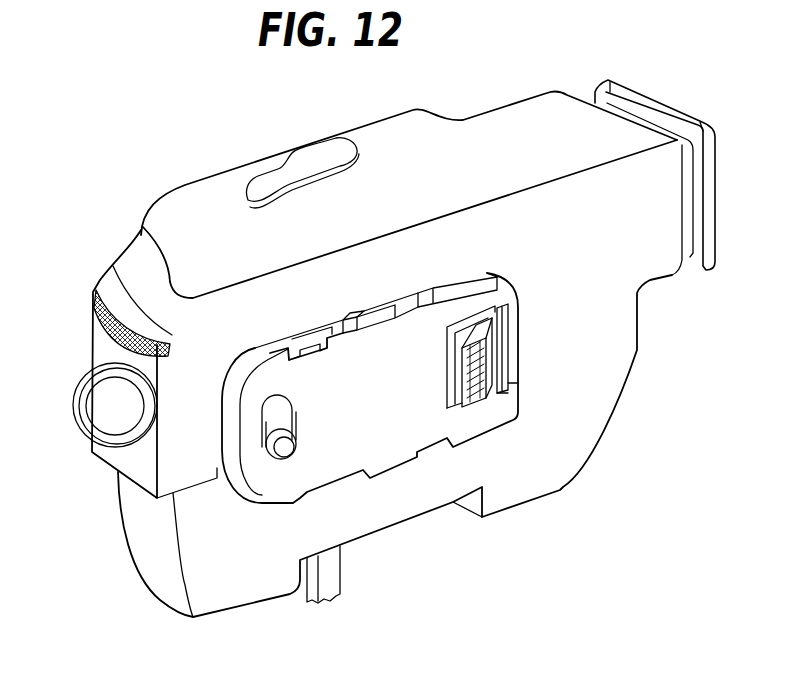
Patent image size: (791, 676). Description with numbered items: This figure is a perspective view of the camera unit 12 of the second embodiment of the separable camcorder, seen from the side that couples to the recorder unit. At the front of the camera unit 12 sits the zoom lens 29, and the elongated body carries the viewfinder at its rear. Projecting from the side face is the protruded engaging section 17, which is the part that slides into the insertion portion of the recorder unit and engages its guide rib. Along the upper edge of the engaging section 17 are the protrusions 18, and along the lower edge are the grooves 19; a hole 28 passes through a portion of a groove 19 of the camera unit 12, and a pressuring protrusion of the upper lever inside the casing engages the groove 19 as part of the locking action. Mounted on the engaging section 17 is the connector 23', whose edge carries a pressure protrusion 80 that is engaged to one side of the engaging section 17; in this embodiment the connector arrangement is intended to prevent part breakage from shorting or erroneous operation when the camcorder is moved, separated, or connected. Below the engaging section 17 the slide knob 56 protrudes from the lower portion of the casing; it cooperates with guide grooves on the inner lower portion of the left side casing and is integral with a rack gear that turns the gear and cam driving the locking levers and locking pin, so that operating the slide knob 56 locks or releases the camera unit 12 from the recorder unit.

The camera unit 12 is at (545, 489).
The protruded engaging section 17 is at (268, 505).
The protrusions 18 is at (357, 315).
The grooves 19 is at (413, 293).
The hole 28 is at (309, 341).
The pressure protrusion 80 is at (510, 357).
The connector 23' is at (427, 370).
The zoom lens 29 is at (100, 420).
The slide knob 56 is at (328, 601).